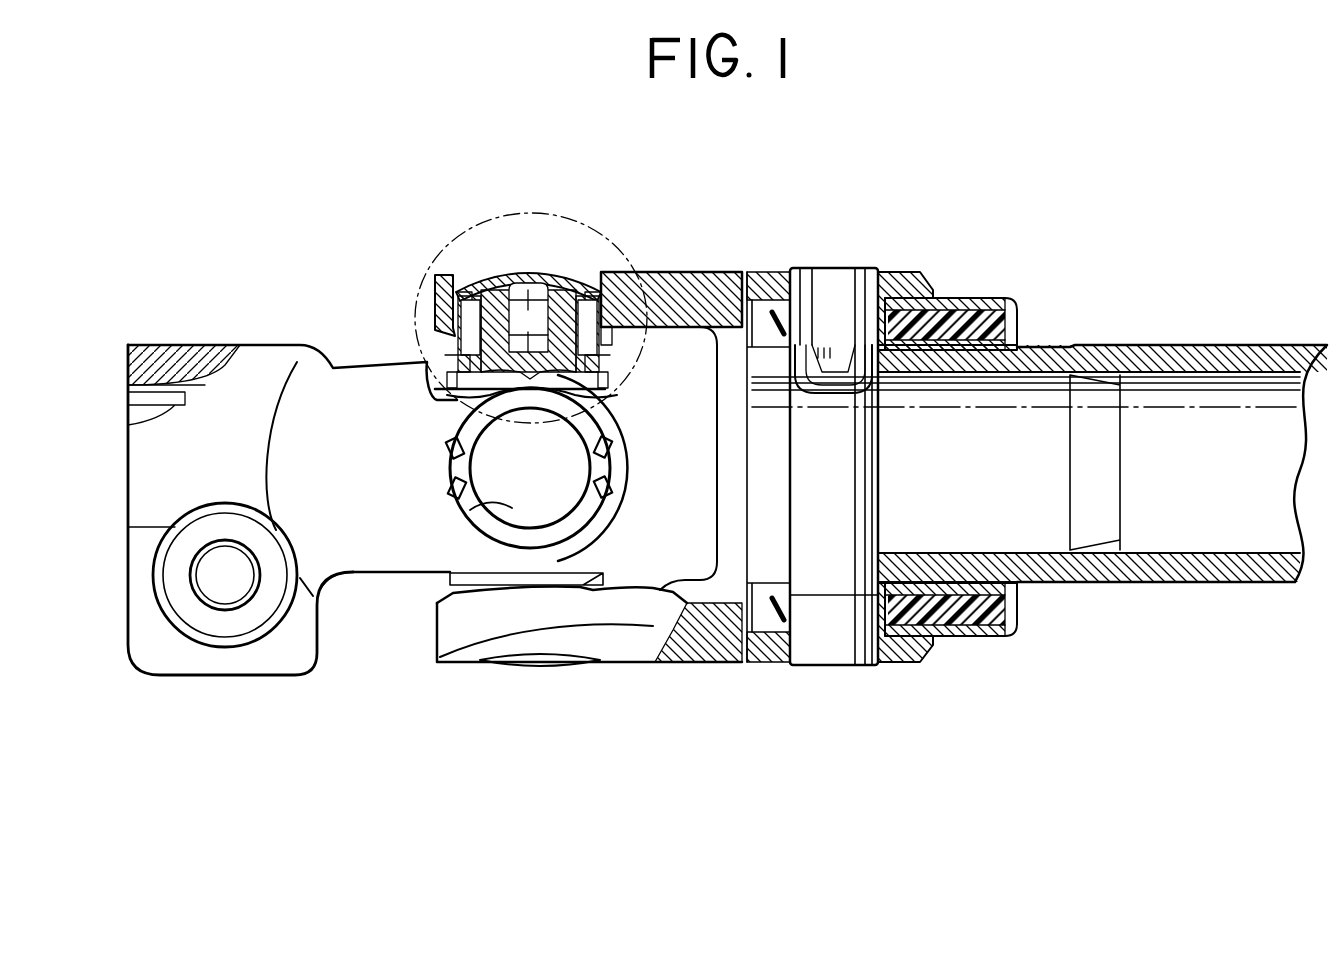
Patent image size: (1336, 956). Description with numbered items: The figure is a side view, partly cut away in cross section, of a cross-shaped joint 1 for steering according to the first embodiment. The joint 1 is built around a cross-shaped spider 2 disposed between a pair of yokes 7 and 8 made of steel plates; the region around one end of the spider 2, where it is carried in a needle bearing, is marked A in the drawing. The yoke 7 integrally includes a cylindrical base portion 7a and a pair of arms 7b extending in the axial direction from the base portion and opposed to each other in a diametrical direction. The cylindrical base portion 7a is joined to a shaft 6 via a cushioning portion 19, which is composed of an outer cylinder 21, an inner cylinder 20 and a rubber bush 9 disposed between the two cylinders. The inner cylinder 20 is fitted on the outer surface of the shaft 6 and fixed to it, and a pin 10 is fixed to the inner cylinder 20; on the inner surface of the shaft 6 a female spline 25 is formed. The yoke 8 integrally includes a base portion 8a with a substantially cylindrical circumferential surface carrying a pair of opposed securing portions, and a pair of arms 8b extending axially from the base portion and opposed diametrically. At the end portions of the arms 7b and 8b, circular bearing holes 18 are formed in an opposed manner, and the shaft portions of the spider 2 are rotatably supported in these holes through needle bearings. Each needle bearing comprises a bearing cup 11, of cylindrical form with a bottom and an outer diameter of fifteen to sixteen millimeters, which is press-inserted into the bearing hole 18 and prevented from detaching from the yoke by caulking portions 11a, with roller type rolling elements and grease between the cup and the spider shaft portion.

The cross-shaped joint 1 is at (672, 245).
The cross-shaped spider 2 is at (490, 277).
The bearing portion A is at (445, 247).
The shaft 6 is at (1158, 345).
The yoke 7 is at (710, 270).
The cylindrical base portion 7a is at (733, 468).
The arm 7b is at (697, 310).
The yoke 8 is at (258, 340).
The base portion 8a is at (158, 470).
The arm 8b is at (355, 542).
The rubber bush 9 is at (907, 320).
The pin 10 is at (862, 268).
The bearing cup 11 is at (540, 500).
The caulking portion 11a is at (452, 486).
The bearing hole 18 is at (512, 507).
The cushioning portion 19 is at (948, 283).
The inner cylinder 20 is at (963, 343).
The outer cylinder 21 is at (1012, 298).
The female spline 25 is at (1200, 397).